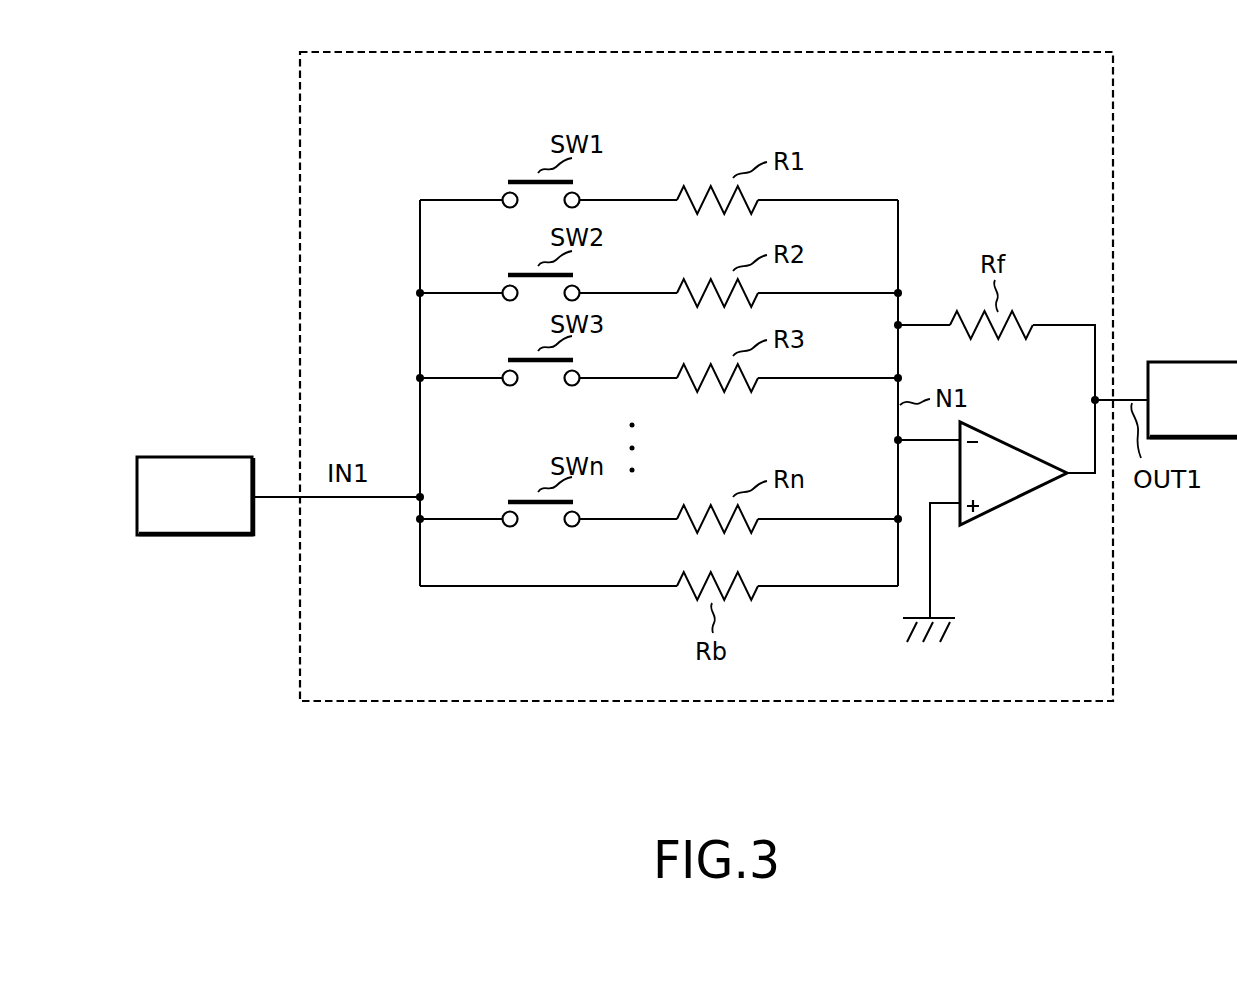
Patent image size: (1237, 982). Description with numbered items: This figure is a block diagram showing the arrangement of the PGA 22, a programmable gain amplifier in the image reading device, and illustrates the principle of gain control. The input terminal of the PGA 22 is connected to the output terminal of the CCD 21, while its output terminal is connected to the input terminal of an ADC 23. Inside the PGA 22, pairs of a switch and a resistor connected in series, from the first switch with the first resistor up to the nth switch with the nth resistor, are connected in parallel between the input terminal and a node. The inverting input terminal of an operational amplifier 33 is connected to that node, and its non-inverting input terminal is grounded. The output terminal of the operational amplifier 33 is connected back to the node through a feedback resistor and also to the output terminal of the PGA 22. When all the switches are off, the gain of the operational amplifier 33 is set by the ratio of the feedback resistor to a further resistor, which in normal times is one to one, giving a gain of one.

The CCD 21 is at (192, 457).
The PGA 22 is at (997, 52).
The ADC 23 is at (1199, 362).
The operational amplifier 33 is at (1000, 440).